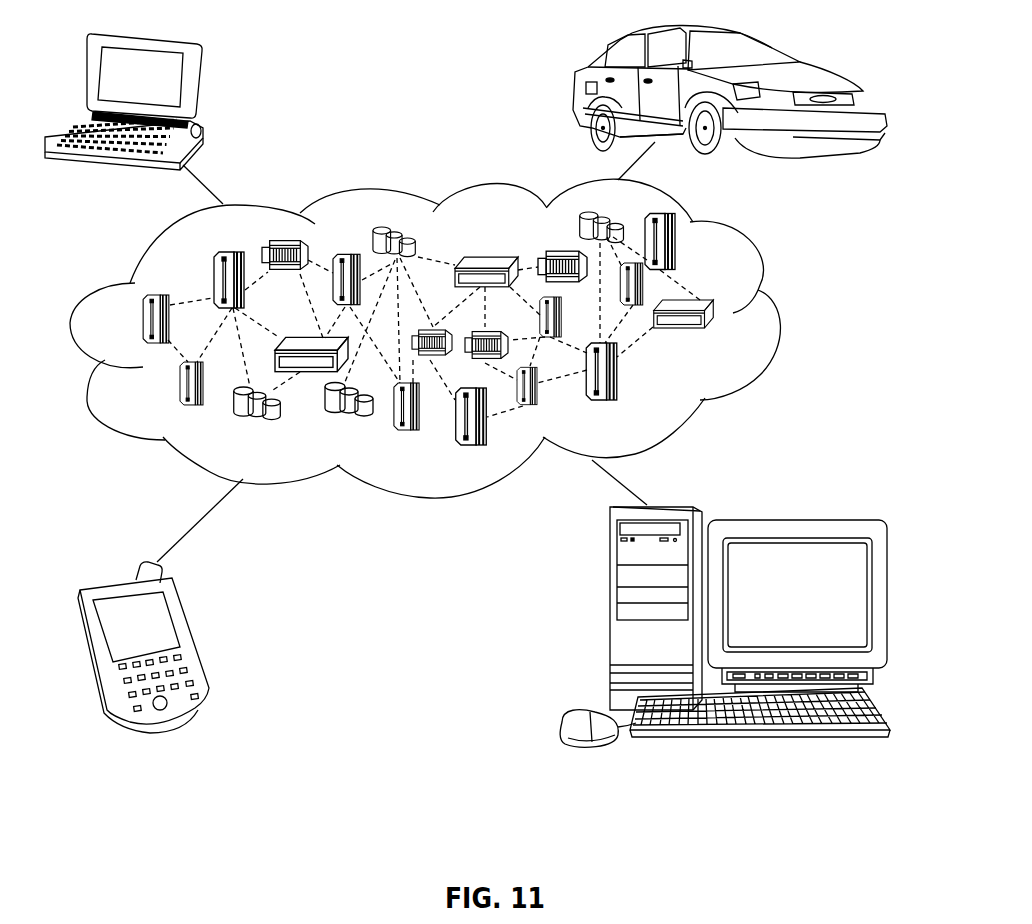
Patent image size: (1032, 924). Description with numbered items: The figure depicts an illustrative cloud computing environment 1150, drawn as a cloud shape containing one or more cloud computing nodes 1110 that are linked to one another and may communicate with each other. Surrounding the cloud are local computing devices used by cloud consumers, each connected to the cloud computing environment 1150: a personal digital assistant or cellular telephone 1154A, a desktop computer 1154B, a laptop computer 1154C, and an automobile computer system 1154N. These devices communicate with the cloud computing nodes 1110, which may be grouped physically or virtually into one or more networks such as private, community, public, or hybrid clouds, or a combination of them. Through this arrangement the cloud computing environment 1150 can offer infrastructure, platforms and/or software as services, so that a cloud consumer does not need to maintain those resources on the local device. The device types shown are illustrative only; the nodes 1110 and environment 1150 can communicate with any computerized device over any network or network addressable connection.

The cloud computing nodes 1110 is at (736, 334).
The cloud computing environment 1150 is at (760, 273).
The personal digital assistant (PDA) or cellular telephone 1154A is at (190, 640).
The desktop computer 1154B is at (607, 617).
The laptop computer 1154C is at (198, 80).
The automobile computer system 1154N is at (585, 85).